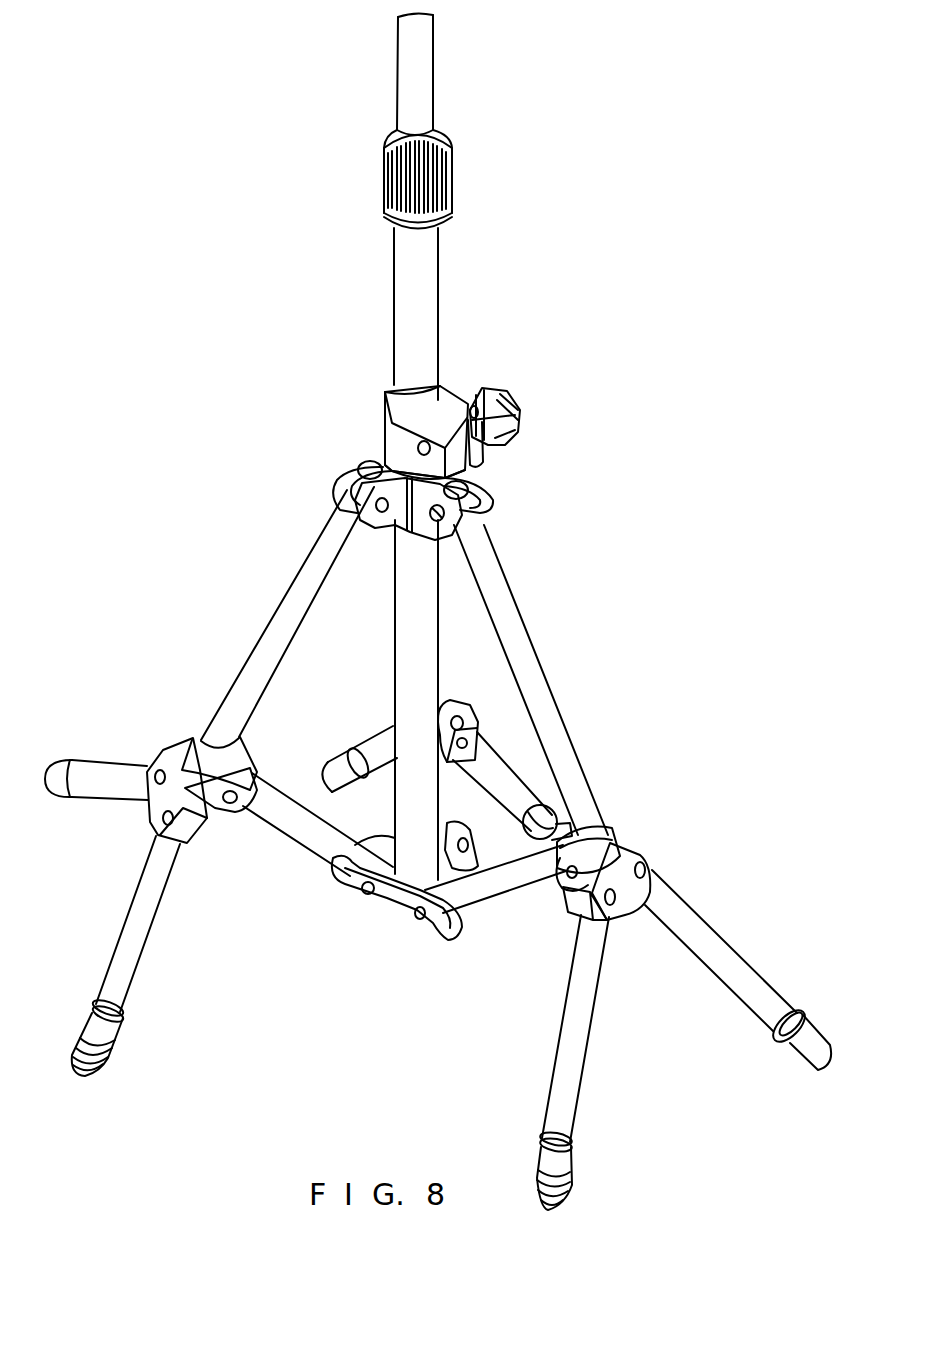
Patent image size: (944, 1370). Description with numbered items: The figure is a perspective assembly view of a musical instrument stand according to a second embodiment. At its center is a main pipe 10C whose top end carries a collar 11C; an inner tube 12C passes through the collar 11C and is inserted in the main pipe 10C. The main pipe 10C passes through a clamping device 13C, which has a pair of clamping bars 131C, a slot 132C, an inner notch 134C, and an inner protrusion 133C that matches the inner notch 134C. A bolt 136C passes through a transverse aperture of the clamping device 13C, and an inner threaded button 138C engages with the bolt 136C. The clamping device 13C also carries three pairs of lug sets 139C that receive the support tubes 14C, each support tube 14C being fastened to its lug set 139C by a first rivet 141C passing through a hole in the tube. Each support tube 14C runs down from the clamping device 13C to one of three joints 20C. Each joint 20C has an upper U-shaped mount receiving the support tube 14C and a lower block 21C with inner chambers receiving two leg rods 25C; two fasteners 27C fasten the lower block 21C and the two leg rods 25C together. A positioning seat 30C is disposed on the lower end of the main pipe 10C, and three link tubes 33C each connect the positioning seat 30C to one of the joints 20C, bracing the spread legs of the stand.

The main pipe 10C is at (436, 272).
The collar 11C is at (386, 177).
The inner tube 12C is at (398, 57).
The clamping device 13C is at (457, 421).
The support tube 14C is at (530, 675).
The joint 20C is at (641, 876).
The lower block 21C is at (648, 862).
The leg rod 25C is at (752, 985).
The fastener 27C is at (638, 880).
The positioning seat 30C is at (392, 907).
The link tube 33C is at (497, 893).
The clamping bar 131C is at (482, 452).
The slot 132C is at (433, 410).
The inner protrusion 133C is at (500, 444).
The inner notch 134C is at (474, 408).
The bolt 136C is at (393, 442).
The inner threaded button 138C is at (517, 413).
The lug set 139C is at (492, 512).
The first rivet 141C is at (437, 513).